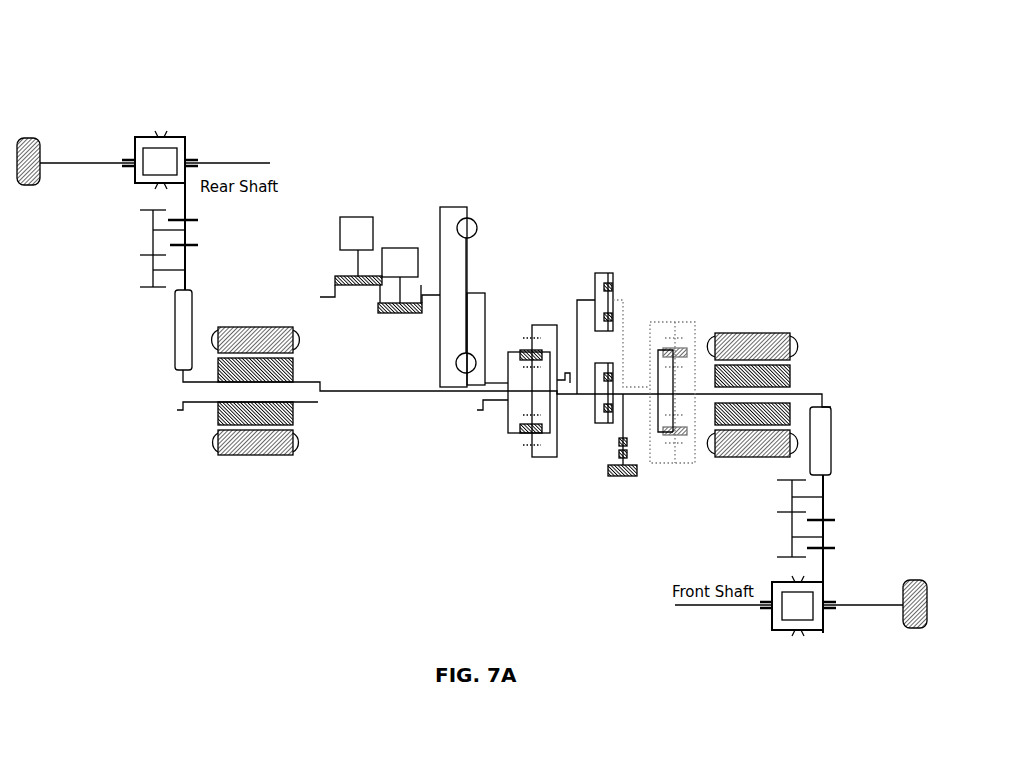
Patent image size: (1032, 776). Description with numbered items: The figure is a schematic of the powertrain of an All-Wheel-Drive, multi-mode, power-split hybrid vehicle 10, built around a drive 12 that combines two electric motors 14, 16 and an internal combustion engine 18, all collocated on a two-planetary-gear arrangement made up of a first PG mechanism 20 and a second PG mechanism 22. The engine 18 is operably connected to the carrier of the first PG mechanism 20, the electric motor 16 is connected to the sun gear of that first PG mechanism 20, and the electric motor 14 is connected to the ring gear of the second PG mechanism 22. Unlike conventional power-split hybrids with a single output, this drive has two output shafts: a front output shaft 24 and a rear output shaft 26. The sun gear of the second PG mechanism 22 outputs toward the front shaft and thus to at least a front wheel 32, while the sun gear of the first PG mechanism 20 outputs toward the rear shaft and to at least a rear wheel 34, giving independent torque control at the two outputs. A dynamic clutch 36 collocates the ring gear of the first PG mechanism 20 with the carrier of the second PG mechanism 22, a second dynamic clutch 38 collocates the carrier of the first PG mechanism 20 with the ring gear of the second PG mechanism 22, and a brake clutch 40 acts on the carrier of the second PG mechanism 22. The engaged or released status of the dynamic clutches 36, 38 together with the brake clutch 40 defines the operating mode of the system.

The vehicle 10 is at (740, 81).
The drive 12 is at (716, 238).
The electric motor 14 is at (752, 332).
The electric motor 16 is at (248, 324).
The internal combustion engine 18 is at (427, 192).
The first PG mechanism 20 is at (533, 285).
The second PG mechanism 22 is at (682, 293).
The front output shaft 24 is at (868, 481).
The rear output shaft 26 is at (118, 282).
The front wheel 32 is at (918, 573).
The rear wheel 34 is at (25, 195).
The dynamic clutch 36 is at (587, 420).
The dynamic clutch 38 is at (613, 243).
The brake clutch 40 is at (623, 480).